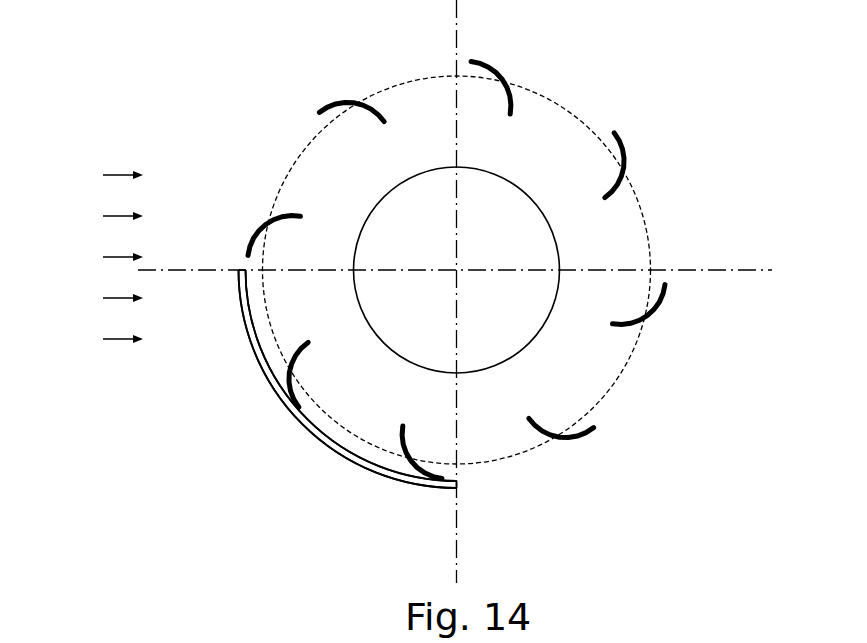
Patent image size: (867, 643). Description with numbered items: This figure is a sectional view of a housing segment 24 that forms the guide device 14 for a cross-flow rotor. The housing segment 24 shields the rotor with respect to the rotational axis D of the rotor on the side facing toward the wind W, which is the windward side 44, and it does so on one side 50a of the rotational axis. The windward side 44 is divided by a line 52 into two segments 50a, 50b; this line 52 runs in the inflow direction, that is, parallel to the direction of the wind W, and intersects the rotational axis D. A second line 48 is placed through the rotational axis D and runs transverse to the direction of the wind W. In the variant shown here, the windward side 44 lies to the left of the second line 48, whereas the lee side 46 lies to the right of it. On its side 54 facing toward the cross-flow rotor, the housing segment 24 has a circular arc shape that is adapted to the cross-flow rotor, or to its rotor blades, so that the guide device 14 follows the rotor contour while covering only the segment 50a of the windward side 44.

The guide device 14 is at (282, 425).
The housing segment 24 is at (265, 367).
The side facing toward the cross-flow rotor 54 is at (353, 452).
The line 52 is at (190, 268).
The second line 48 is at (457, 535).
The rotational axis D is at (457, 270).
The wind W is at (103, 257).
The segment of the windward side 50a is at (183, 371).
The segment of the windward side 50b is at (172, 153).
The windward side 44 is at (307, 547).
The lee side 46 is at (680, 468).